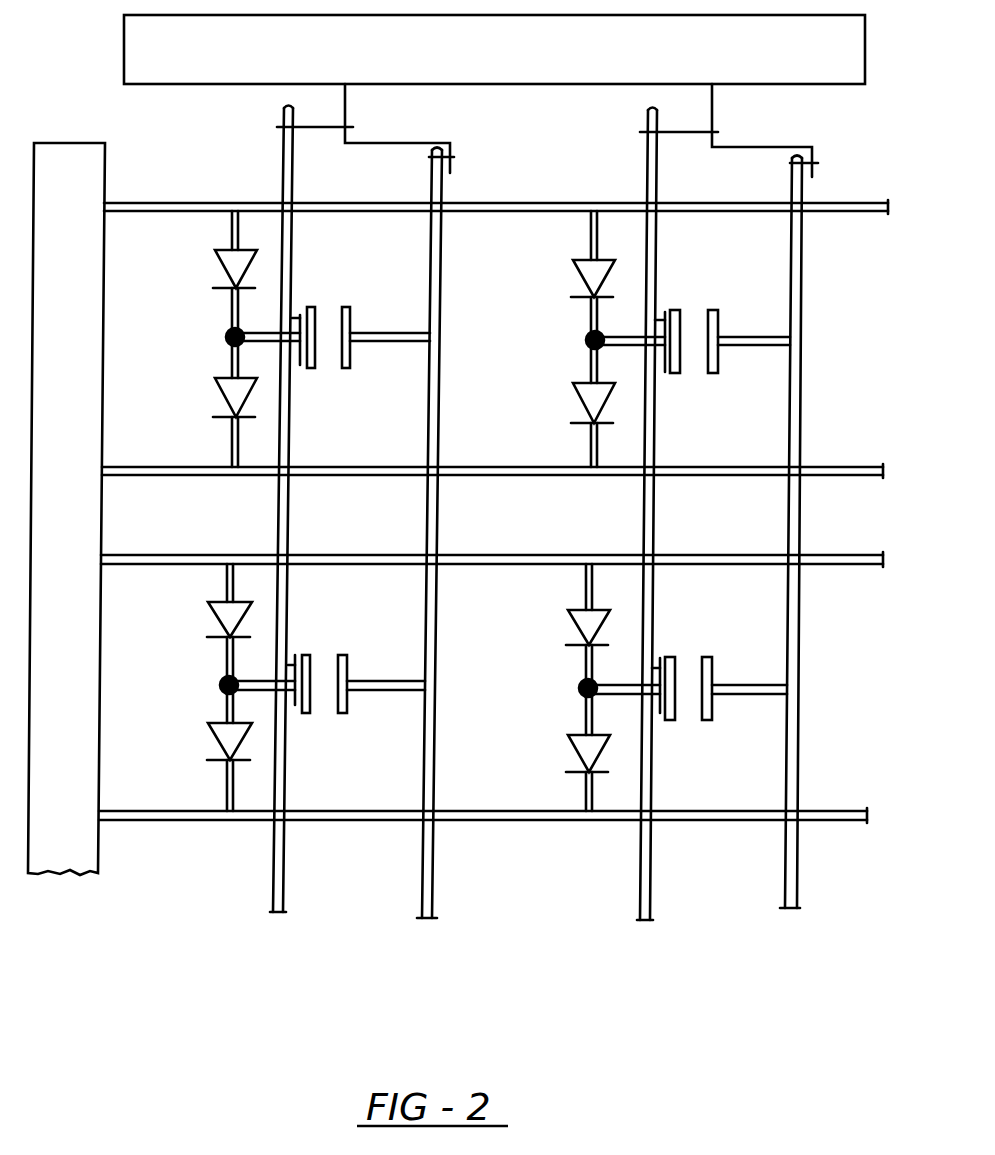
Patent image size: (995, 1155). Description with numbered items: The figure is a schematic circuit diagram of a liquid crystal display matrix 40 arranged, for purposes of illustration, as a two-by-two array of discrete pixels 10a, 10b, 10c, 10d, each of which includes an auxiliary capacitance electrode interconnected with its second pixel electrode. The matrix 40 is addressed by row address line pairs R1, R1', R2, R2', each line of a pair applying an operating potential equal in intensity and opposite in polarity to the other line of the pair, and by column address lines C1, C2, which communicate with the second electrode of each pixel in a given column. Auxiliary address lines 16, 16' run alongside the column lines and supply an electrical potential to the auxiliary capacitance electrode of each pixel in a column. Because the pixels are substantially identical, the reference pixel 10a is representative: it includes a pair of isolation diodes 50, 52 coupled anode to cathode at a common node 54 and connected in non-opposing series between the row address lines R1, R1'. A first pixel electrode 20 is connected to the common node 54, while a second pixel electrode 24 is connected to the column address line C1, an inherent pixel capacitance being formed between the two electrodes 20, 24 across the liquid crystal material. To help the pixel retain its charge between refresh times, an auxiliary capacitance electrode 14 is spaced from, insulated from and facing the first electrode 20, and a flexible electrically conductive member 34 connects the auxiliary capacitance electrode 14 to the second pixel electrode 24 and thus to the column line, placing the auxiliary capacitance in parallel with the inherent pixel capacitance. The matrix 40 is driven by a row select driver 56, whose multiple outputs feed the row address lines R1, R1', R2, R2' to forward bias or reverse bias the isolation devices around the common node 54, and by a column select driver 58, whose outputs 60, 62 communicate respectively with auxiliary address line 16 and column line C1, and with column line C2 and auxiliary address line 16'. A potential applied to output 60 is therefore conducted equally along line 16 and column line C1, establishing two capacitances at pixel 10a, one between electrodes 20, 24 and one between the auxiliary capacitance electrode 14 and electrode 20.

The column select driver 58 is at (474, 57).
The row select driver 56 is at (86, 412).
The column output 60 is at (345, 108).
The column output 62 is at (712, 112).
The flexible electrically conductive member 34 is at (420, 143).
The auxiliary address line 16 is at (310, 516).
The auxiliary address line 16' is at (615, 529).
The column address line C1 is at (422, 900).
The column address line C2 is at (787, 895).
The row address line R1 is at (496, 185).
The row address line R1' is at (492, 450).
The row address line R2 is at (492, 538).
The row address line R2' is at (483, 796).
The pixel 10a is at (273, 338).
The pixel 10b is at (548, 317).
The pixel 10c is at (184, 665).
The pixel 10d is at (548, 680).
The isolation diode 50 is at (223, 267).
The isolation diode 52 is at (227, 392).
The common node 54 is at (223, 338).
The auxiliary capacitance electrode 14 is at (292, 318).
The first pixel electrode 20 is at (313, 363).
The second pixel electrode 24 is at (348, 320).
The liquid crystal display matrix 40 is at (197, 917).